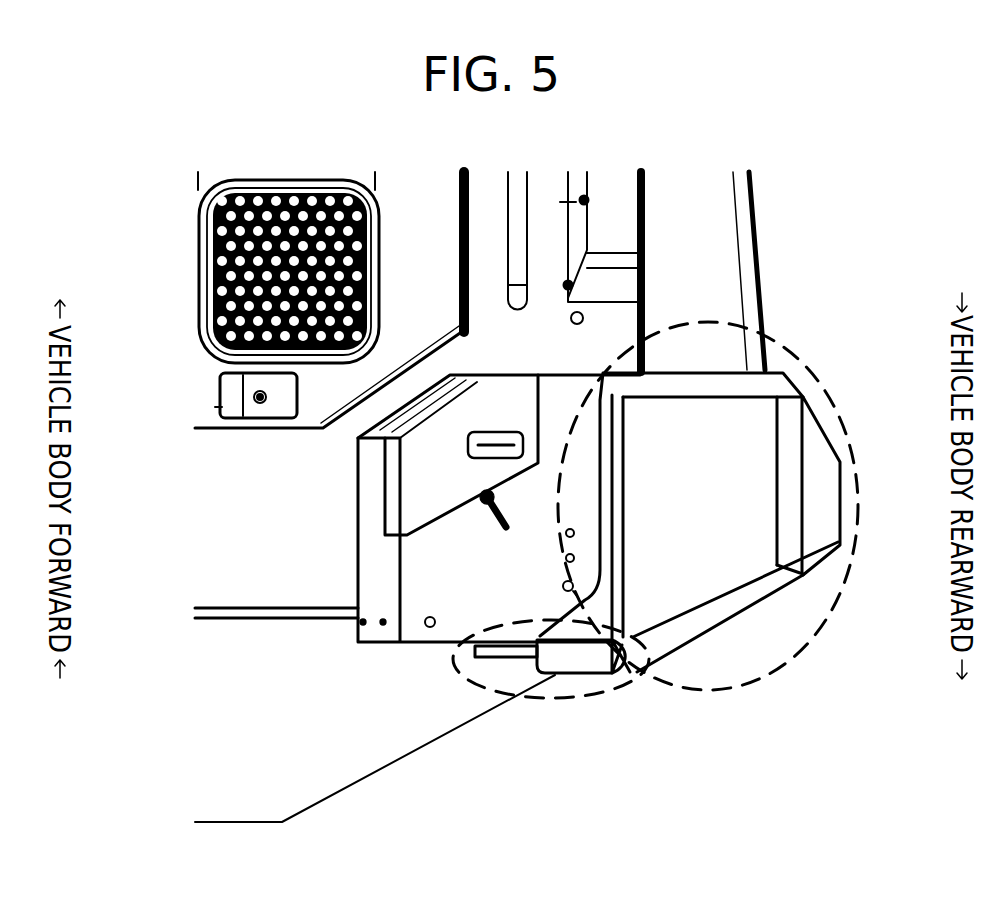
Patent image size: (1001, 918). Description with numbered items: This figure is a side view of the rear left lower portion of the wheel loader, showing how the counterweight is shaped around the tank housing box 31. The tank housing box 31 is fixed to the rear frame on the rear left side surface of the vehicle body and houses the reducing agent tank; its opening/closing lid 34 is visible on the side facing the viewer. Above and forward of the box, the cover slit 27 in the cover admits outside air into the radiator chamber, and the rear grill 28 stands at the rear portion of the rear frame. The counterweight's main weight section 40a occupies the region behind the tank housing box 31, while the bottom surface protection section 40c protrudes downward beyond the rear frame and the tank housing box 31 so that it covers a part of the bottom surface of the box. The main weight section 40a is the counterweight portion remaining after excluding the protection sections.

The cover slit 27 is at (200, 247).
The rear grill 28 is at (758, 222).
The tank housing box 31 is at (358, 558).
The opening/closing lid 34 is at (385, 473).
The main weight section 40a is at (797, 648).
The bottom surface protection section 40c is at (547, 698).